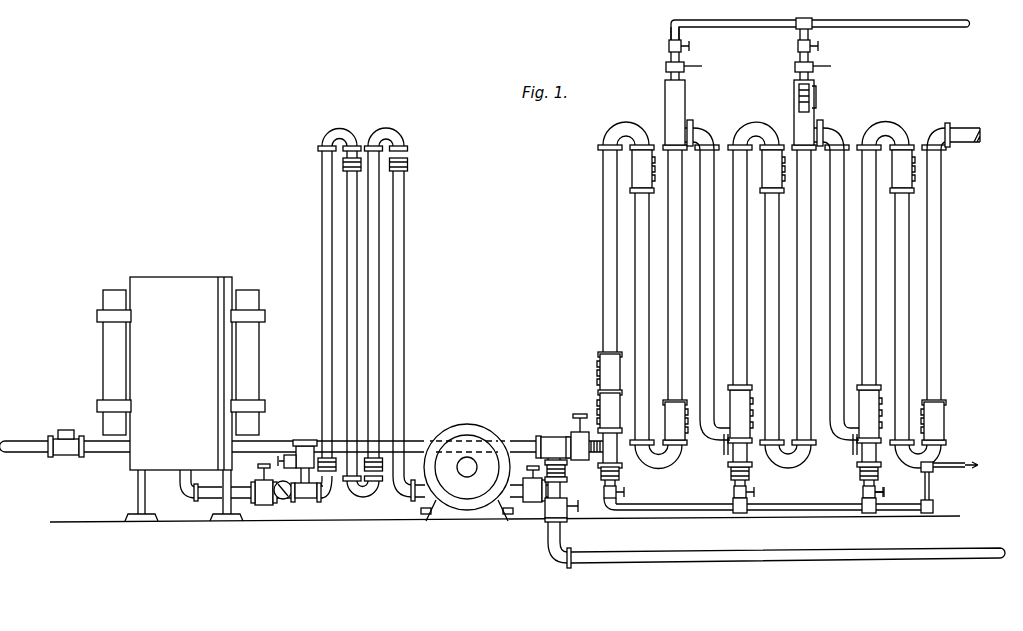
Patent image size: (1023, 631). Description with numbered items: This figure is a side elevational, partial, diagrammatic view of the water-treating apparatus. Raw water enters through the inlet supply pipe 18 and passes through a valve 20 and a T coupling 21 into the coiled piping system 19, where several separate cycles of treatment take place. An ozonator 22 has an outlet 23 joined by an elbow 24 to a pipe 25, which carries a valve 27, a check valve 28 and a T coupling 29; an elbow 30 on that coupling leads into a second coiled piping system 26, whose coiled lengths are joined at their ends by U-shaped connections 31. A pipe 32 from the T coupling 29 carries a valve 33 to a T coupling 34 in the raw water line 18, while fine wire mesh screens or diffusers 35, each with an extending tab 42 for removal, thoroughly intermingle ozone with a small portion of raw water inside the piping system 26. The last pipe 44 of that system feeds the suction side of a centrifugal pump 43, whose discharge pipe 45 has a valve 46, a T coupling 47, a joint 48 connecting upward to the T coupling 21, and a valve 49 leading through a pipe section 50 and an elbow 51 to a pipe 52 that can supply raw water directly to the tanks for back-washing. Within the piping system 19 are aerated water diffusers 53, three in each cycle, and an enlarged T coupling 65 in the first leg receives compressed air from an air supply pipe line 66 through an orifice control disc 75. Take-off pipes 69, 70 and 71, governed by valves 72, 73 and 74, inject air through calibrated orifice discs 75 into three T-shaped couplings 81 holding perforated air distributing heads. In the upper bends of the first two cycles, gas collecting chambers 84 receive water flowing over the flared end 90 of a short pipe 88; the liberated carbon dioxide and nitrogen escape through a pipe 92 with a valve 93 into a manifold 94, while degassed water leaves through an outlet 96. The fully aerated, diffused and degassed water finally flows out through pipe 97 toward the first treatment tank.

The inlet supply pipe 18 is at (28, 441).
The coiled piping system 19 is at (598, 300).
The valve 20 is at (572, 437).
The T coupling 21 is at (543, 437).
The ozonator 22 is at (226, 277).
The outlet 23 is at (178, 478).
The elbow 24 is at (190, 498).
The pipe 25 is at (216, 498).
The coiled piping system 26 is at (363, 313).
The valve 27 is at (264, 503).
The check valve 28 is at (284, 500).
The T coupling 29 is at (306, 498).
The elbow 30 is at (363, 497).
The U-shaped connections 31 is at (322, 138).
The pipe 32 is at (326, 496).
The valve 33 is at (290, 455).
The T coupling 34 is at (305, 441).
The screens or diffusers 35 is at (343, 165).
The tab or grip portion 42 is at (343, 168).
The centrifugal pump 43 is at (467, 424).
The pipe 44 is at (460, 514).
The discharge pipe 45 is at (530, 502).
The valve 46 is at (544, 501).
The T coupling 47 is at (568, 507).
The joint or pipe 48 is at (567, 463).
The valve 49 is at (562, 520).
The pipe section 50 is at (550, 547).
The elbow 51 is at (568, 569).
The pipe 52 is at (688, 562).
The aerated water diffusers 53 is at (623, 132).
The enlarged T coupling 65 is at (622, 462).
The air supply pipe line 66 is at (692, 504).
The take-off pipe 69 is at (625, 506).
The take-off pipe 70 is at (750, 505).
The take-off pipe 71 is at (863, 494).
The valve 72 is at (624, 491).
The valve 73 is at (734, 492).
The valve 74 is at (876, 491).
The orifice control discs 75 is at (596, 440).
The T-shaped coupling 81 is at (600, 397).
The gas collecting and discharging chamber 84 is at (757, 98).
The pipe 88 is at (817, 108).
The flared end 90 is at (799, 96).
The pipe 92 is at (669, 58).
The valve 93 is at (669, 45).
The manifold 94 is at (874, 27).
The outlet 96 is at (696, 134).
The pipe 97 is at (981, 130).